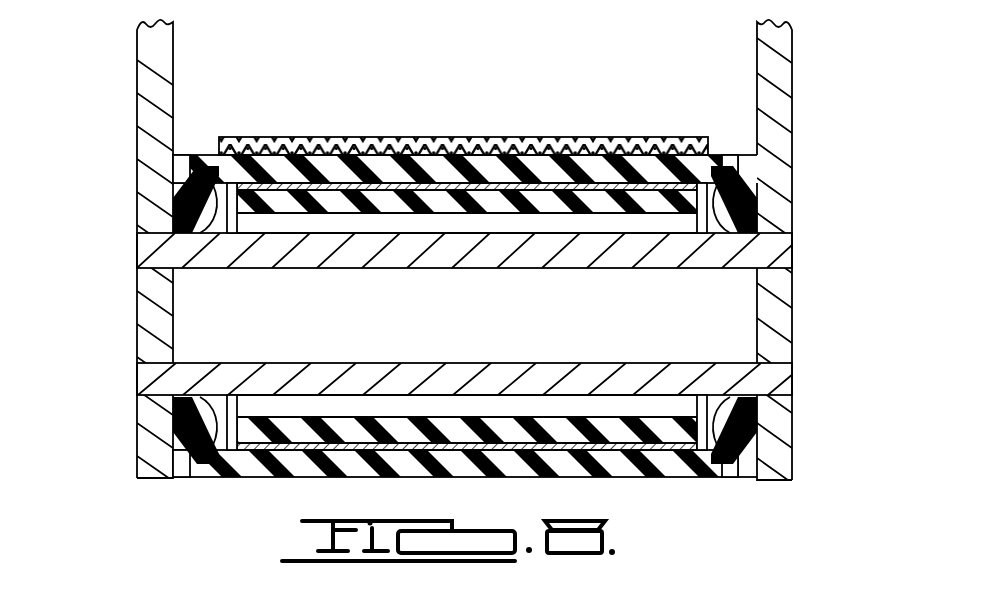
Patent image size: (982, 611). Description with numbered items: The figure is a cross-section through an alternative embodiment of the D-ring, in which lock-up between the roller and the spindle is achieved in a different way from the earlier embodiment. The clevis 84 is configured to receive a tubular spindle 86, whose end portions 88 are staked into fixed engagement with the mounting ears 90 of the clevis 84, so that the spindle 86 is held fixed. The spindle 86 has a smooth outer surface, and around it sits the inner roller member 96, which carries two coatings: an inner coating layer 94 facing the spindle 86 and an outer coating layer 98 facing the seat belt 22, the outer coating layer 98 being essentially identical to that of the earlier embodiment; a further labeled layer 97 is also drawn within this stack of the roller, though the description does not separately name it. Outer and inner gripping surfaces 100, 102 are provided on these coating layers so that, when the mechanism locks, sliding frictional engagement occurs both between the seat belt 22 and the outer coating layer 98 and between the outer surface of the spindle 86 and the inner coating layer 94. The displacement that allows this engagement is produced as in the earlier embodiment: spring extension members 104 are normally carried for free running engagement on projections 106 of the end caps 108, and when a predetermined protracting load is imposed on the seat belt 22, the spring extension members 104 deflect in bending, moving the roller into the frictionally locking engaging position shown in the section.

The seat belt 22 is at (392, 140).
The clevis 84 is at (150, 123).
The tubular spindle 86 is at (295, 258).
The end portions 88 is at (138, 378).
The mounting ears 90 is at (785, 37).
The inner coating layer 94 is at (666, 224).
The inner roller member 96 is at (478, 178).
The inner plate 97 is at (598, 195).
The outer coating layer 98 is at (266, 170).
The outer gripping surface 100 is at (722, 140).
The inner gripping surface 102 is at (512, 212).
The spring extension members 104 is at (198, 162).
The projections 106 is at (172, 210).
The end caps 108 is at (754, 162).